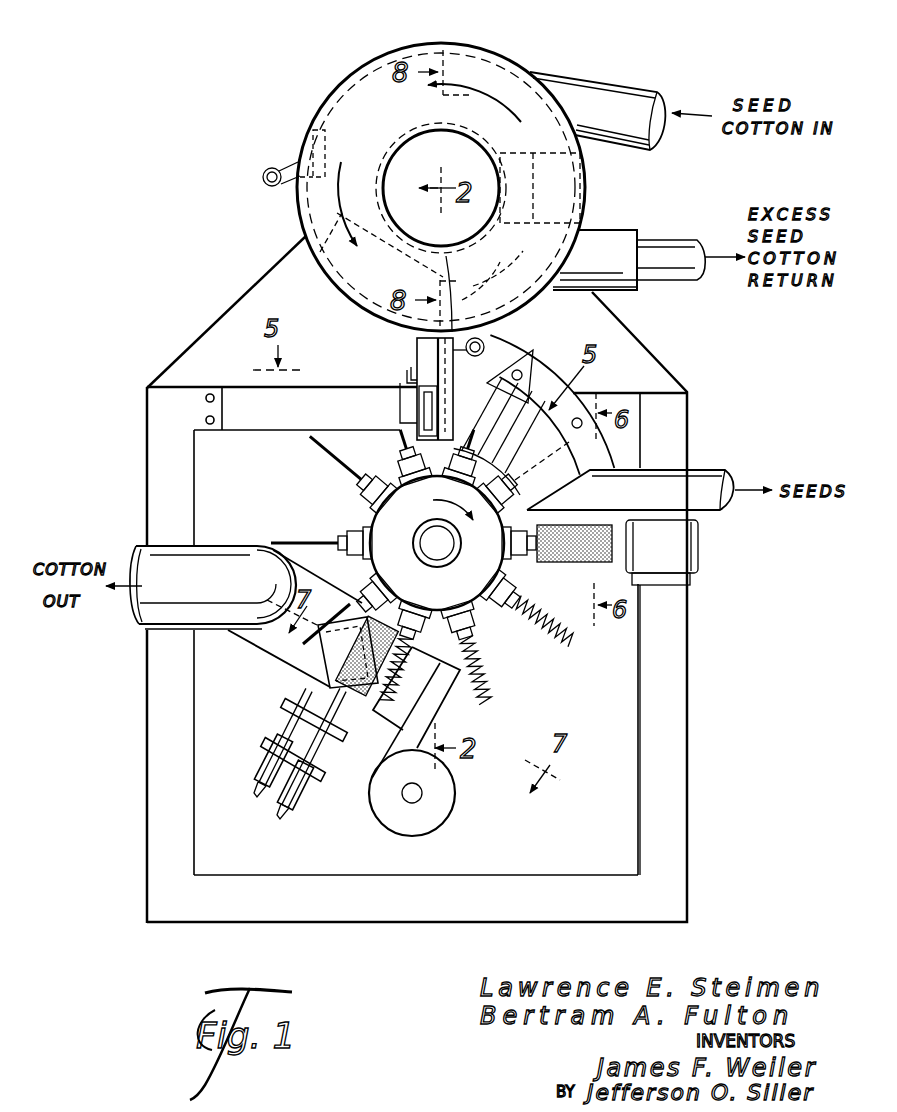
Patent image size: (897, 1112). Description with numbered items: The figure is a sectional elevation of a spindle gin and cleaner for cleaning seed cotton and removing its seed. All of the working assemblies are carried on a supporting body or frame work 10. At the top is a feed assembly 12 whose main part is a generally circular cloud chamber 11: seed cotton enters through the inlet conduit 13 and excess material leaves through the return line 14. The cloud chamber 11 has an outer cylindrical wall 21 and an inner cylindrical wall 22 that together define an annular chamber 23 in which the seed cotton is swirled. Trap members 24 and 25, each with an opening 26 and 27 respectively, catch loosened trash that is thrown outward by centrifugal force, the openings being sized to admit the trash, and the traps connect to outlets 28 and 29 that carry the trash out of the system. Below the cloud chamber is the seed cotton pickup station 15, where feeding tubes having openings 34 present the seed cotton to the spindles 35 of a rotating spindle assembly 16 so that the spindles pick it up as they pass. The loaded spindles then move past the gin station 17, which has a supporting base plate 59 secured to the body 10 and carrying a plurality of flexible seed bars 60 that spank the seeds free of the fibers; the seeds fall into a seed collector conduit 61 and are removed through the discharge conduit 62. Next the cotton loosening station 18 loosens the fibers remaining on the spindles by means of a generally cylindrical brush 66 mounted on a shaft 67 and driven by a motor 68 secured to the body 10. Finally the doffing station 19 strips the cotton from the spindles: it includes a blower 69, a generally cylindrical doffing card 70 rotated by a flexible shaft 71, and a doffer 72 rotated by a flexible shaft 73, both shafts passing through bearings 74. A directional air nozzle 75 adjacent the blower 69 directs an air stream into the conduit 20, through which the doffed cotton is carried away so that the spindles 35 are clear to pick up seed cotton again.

The supporting body or frame work 10 is at (690, 692).
The cloud chamber 11 is at (352, 72).
The feed assembly 12 is at (416, 346).
The inlet conduit 13 is at (603, 95).
The return line 14 is at (618, 234).
The seed cotton pickup station 15 is at (462, 378).
The spindle assembly 16 is at (364, 515).
The gin station 17 is at (543, 388).
The cotton loosening station 18 is at (580, 567).
The doffing station 19 is at (362, 703).
The conduit 20 is at (200, 590).
The outer cylindrical wall 21 is at (363, 66).
The inner cylindrical wall 22 is at (396, 160).
The annular chamber 23 is at (382, 128).
The trap member 24 is at (300, 190).
The trap member 25 is at (495, 284).
The opening 26 is at (318, 130).
The opening 27 is at (488, 307).
The outlet 28 is at (265, 175).
The outlet 29 is at (485, 338).
The opening 34 is at (420, 412).
The spindles 35 is at (315, 448).
The supporting base plate 59 is at (594, 392).
The flexible seed bars 60 is at (527, 385).
The seed collector conduit 61 is at (540, 451).
The discharge conduit 62 is at (675, 498).
The brush 66 is at (552, 566).
The shaft 67 is at (620, 548).
The motor 68 is at (670, 551).
The blower 69 is at (370, 822).
The doffing card 70 is at (385, 712).
The flexible shaft 71 is at (278, 813).
The doffer 72 is at (328, 657).
The flexible shaft 73 is at (256, 787).
The bearings 74 is at (298, 718).
The air nozzle 75 is at (428, 663).